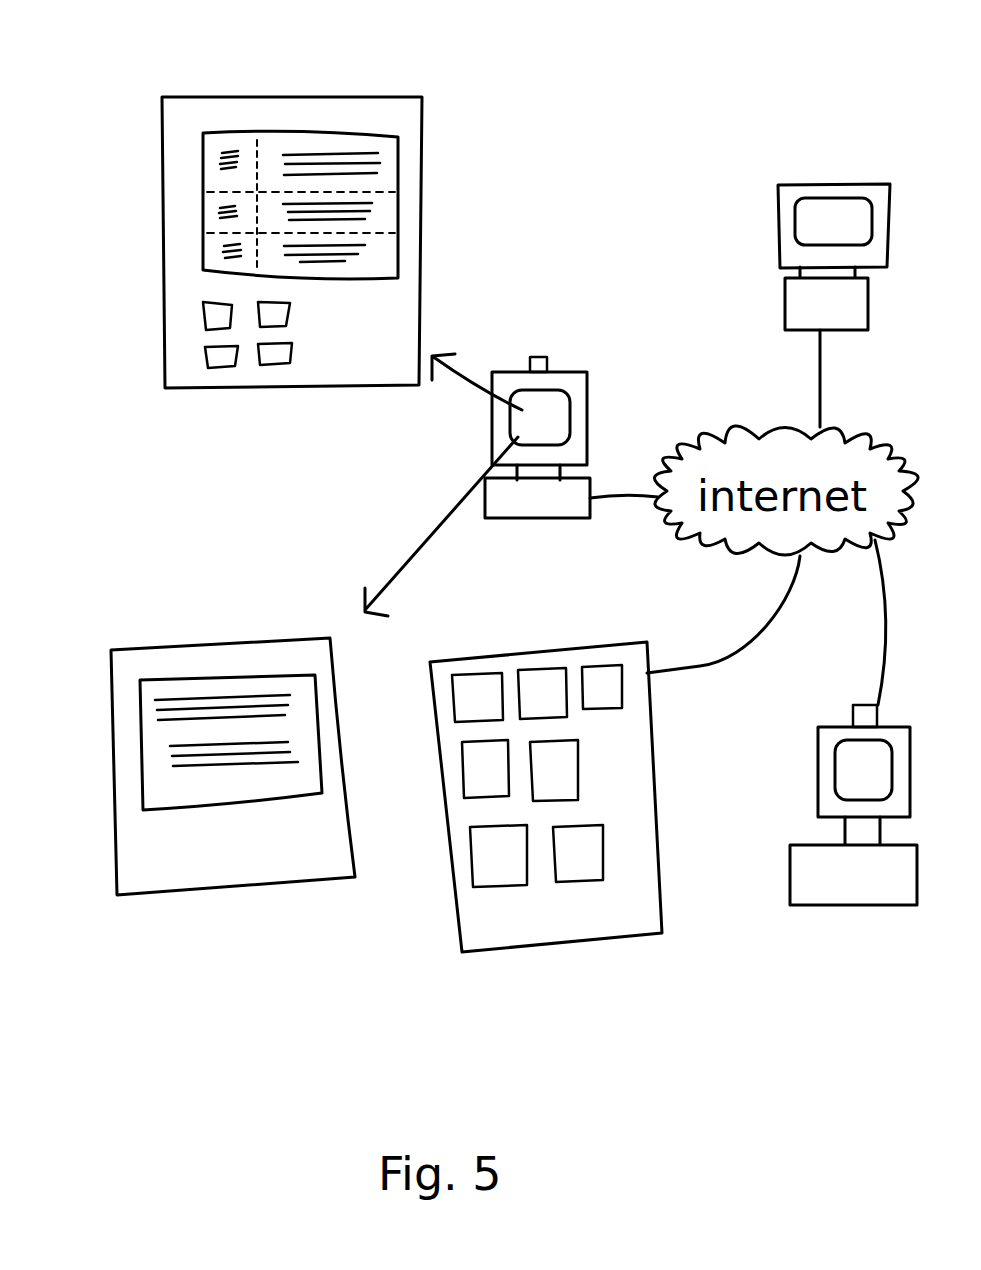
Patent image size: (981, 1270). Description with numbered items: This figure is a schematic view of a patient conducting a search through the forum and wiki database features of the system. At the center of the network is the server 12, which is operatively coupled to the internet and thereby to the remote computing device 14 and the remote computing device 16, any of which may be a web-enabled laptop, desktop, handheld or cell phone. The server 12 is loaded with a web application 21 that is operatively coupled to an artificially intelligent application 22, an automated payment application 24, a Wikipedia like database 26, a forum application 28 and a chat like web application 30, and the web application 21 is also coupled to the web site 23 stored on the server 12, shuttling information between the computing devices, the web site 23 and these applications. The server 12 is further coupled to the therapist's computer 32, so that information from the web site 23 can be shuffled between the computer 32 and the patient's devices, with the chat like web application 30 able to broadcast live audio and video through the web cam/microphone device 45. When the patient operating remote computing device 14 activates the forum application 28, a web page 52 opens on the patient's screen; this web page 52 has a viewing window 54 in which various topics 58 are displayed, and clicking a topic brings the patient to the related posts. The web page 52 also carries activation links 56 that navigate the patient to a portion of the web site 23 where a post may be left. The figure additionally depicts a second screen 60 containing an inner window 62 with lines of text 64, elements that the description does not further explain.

The server 12 is at (546, 768).
The remote computing device 14 is at (596, 475).
The remote computing device 16 is at (785, 297).
The web application 21 is at (498, 856).
The artificially intelligent application 22 is at (477, 697).
The web site 23 is at (578, 853).
The automated payment application 24 is at (542, 693).
The Wikipedia like database 26 is at (602, 687).
The forum application 28 is at (485, 769).
The chat like web application 30 is at (554, 770).
The computer 32 is at (790, 848).
The web cam/microphone device 45 is at (546, 358).
The web page 52 is at (305, 100).
The viewing window 54 is at (362, 130).
The activation links 56 is at (225, 372).
The topics 58 is at (380, 258).
The second display screen 60 is at (160, 657).
The message window 62 is at (145, 757).
The message text lines 64 is at (222, 703).